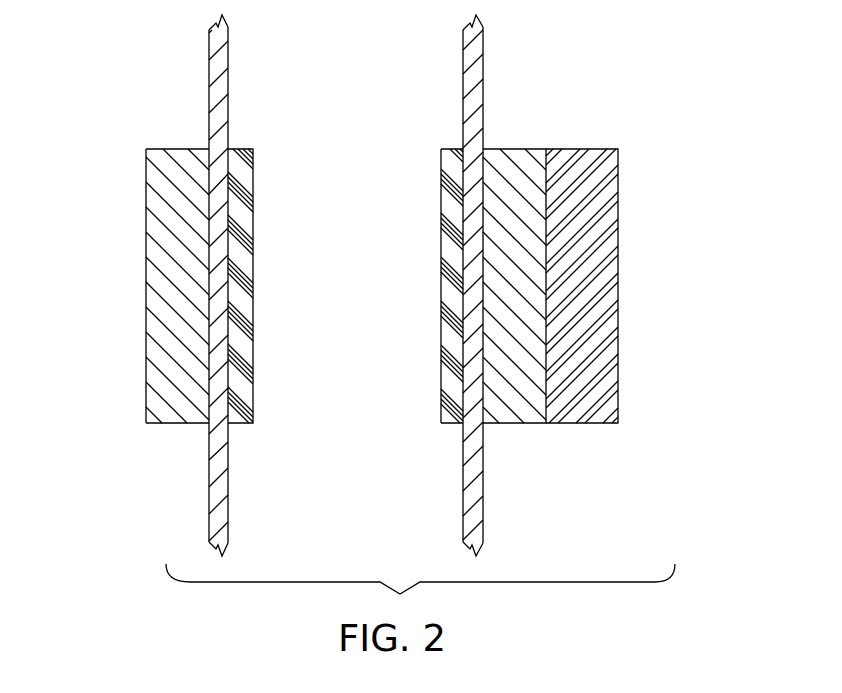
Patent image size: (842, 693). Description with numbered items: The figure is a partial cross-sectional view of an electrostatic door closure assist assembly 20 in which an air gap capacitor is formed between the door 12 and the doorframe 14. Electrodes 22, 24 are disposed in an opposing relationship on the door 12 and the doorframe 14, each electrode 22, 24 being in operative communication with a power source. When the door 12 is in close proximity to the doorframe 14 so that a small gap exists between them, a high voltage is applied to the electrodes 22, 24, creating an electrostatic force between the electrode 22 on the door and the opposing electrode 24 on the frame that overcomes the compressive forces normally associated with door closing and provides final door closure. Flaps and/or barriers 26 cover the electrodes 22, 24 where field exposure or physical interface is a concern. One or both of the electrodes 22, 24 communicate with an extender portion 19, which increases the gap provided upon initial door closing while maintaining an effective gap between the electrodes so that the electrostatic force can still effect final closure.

The door 12 is at (209, 57).
The doorframe 14 is at (463, 517).
The extender portion 19 is at (618, 204).
The electrostatic door closure assist assembly 20 is at (695, 86).
The electrode 22 is at (146, 208).
The electrode 24 is at (512, 150).
The flaps and/or barriers 26 is at (253, 213).